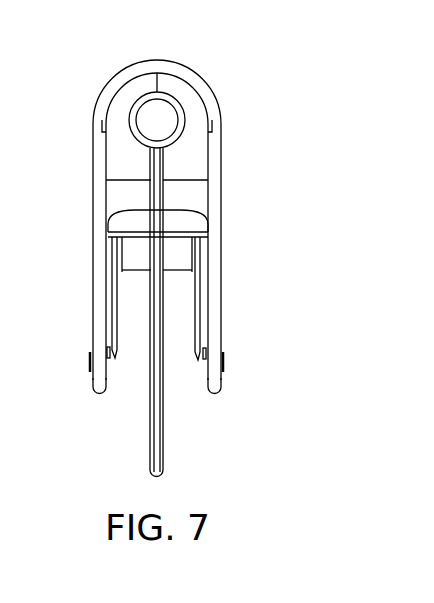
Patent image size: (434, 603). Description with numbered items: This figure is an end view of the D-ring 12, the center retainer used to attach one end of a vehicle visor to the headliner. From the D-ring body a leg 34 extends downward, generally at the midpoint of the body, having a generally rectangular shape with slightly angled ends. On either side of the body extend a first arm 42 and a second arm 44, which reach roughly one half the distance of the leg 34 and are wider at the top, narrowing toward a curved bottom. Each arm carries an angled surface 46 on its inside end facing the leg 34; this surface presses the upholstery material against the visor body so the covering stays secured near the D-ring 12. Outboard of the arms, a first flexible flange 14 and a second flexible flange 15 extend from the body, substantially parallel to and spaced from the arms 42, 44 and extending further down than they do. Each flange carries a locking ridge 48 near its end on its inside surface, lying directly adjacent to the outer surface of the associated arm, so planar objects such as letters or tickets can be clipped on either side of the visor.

The D-ring 12 is at (204, 76).
The first flexible flange 14 is at (92, 312).
The second flexible flange 15 is at (222, 284).
The leg 34 is at (148, 435).
The first arm 42 is at (120, 242).
The second arm 44 is at (180, 250).
The angled surface 46 is at (117, 352).
The locking ridge 48 is at (109, 359).